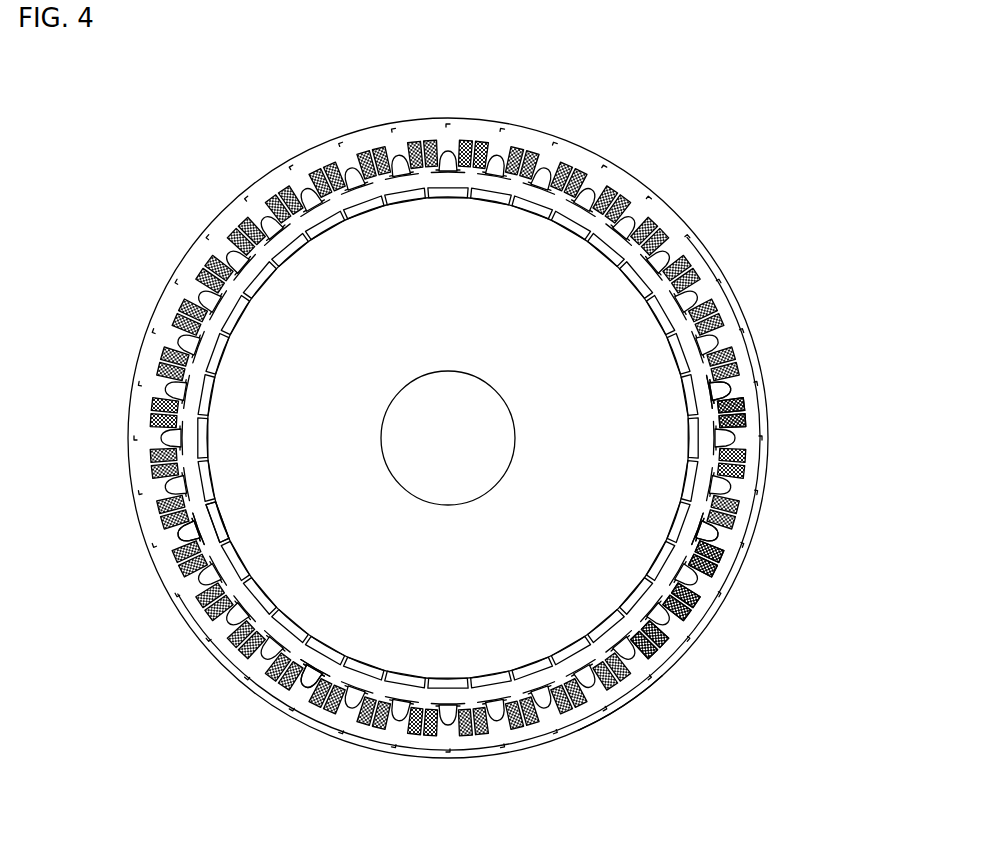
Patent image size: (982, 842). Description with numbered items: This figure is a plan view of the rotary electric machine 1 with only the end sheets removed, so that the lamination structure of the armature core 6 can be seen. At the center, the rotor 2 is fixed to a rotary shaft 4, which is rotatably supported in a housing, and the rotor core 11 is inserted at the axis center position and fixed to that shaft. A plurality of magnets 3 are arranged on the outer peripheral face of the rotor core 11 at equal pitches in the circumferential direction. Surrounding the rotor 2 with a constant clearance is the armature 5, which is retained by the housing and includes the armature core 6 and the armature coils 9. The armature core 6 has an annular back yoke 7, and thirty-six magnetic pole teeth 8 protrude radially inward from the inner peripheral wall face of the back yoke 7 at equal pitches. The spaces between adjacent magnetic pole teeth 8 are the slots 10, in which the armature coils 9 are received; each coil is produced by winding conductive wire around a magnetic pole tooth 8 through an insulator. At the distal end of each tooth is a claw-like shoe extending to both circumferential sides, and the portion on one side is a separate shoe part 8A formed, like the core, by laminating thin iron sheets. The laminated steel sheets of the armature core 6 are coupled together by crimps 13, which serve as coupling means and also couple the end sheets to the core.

The rotary electric machine 1 is at (697, 188).
The rotor 2 is at (207, 640).
The magnet 3 is at (307, 673).
The rotary shaft 4 is at (477, 477).
The armature 5 is at (625, 707).
The armature core 6 is at (655, 652).
The back yoke 7 is at (697, 620).
The magnetic pole tooth 8 is at (727, 535).
The shoe part 8A is at (710, 567).
The armature coil 9 is at (750, 474).
The slot 10 is at (745, 411).
The rotor core 11 is at (240, 502).
The crimp 13 is at (752, 378).